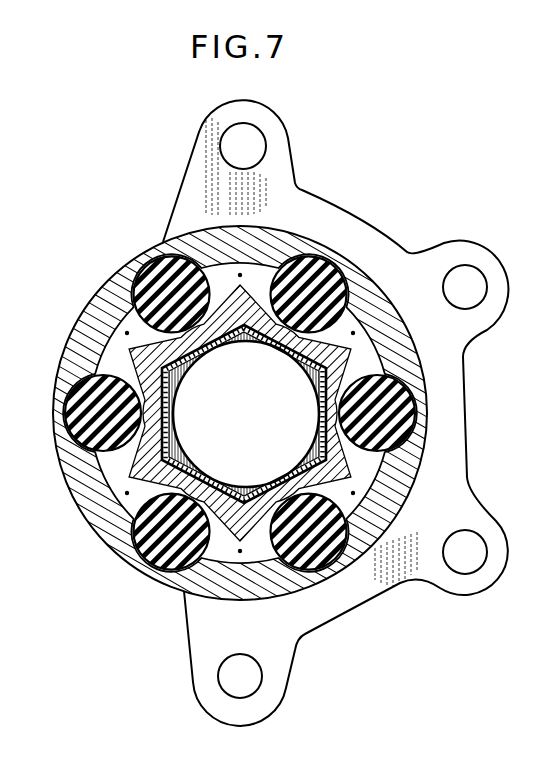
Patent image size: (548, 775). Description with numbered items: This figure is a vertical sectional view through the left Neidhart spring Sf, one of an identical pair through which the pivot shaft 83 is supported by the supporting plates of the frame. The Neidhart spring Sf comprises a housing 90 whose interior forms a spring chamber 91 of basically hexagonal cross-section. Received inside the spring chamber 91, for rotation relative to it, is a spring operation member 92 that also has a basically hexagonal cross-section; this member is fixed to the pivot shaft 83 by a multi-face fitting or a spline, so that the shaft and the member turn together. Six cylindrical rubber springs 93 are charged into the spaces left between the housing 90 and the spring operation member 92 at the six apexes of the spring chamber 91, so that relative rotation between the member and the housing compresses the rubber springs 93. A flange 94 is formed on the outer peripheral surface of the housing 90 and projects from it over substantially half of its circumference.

The pivot shaft 83 is at (201, 347).
The housing 90 is at (112, 283).
The spring chamber 91 is at (126, 331).
The spring operation member 92 is at (136, 470).
The cylindrical rubber springs 93 is at (155, 272).
The flange 94 is at (280, 140).
The Neidhart spring Sf is at (118, 244).